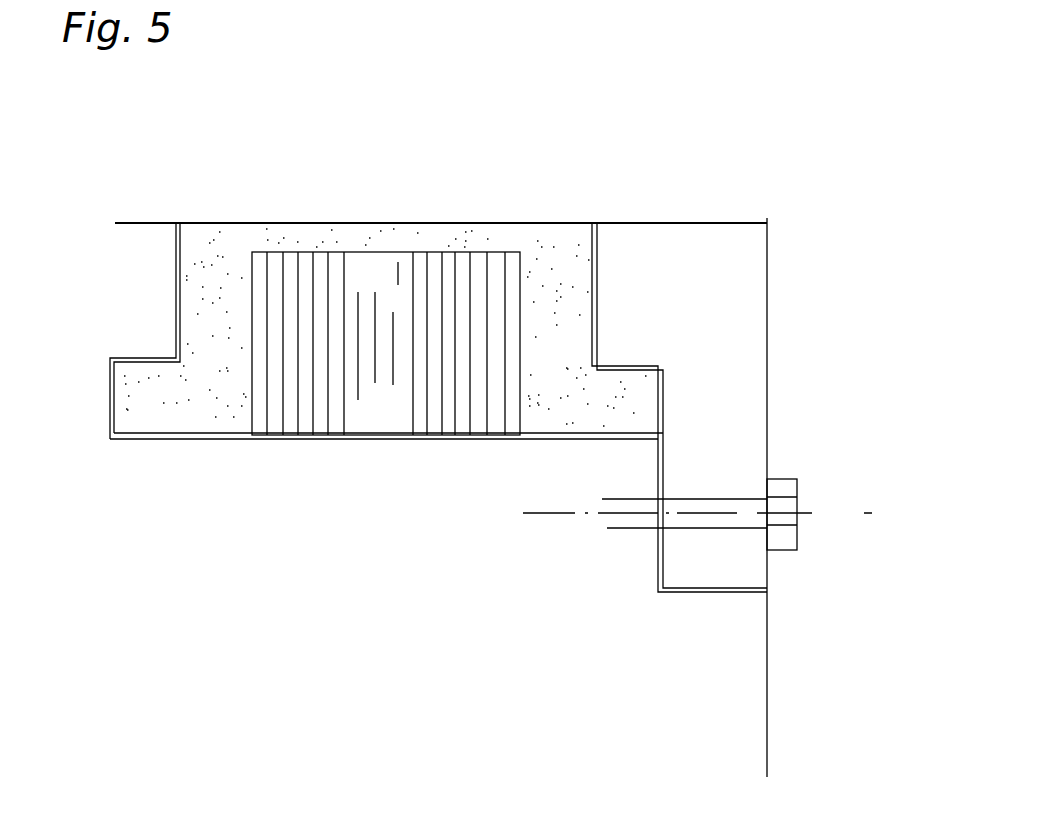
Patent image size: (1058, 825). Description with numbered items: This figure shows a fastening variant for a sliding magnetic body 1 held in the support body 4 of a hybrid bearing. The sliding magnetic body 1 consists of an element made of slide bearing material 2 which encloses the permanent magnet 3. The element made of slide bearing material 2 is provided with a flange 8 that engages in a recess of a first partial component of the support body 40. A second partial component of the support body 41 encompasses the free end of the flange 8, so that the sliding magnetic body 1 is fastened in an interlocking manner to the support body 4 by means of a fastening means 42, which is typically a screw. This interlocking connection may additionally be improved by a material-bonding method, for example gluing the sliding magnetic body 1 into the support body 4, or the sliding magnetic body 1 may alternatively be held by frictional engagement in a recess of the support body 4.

The sliding magnetic body 1 is at (408, 205).
The element made of slide bearing material 2 is at (550, 250).
The permanent magnet 3 is at (473, 413).
The support body 4 is at (350, 490).
The flange 8 is at (157, 415).
The first partial component of the support body 40 is at (129, 331).
The second partial component of the support body 41 is at (697, 497).
The fastening means 42 is at (797, 479).